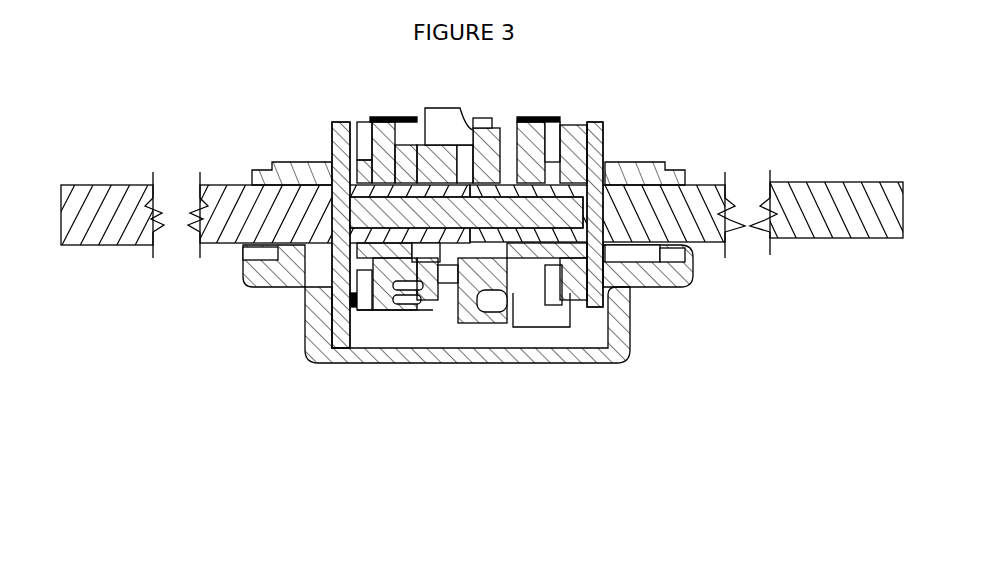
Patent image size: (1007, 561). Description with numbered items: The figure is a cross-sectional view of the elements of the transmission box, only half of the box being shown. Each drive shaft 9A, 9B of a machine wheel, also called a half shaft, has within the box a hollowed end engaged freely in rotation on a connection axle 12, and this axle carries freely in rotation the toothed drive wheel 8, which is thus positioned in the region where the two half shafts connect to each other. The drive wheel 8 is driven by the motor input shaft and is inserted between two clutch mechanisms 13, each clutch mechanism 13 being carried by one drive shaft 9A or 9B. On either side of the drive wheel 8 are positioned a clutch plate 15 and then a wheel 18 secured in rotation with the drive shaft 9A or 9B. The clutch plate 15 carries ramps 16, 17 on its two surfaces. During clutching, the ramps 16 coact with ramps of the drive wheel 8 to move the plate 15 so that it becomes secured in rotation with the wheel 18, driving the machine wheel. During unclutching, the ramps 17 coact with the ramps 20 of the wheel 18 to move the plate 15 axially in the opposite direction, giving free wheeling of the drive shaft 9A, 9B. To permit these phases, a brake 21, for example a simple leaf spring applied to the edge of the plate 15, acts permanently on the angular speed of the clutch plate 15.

The drive wheel 8 is at (474, 353).
The drive shaft 9A is at (692, 181).
The drive shaft 9B is at (265, 175).
The connection axle 12 is at (391, 266).
The clutch mechanism 13 is at (315, 387).
The clutch plate 15 is at (360, 353).
The ramps 16 is at (415, 353).
The ramps 17 is at (283, 359).
The wheel 18 is at (276, 344).
The ramps 20 is at (586, 353).
The brake 21 is at (575, 115).